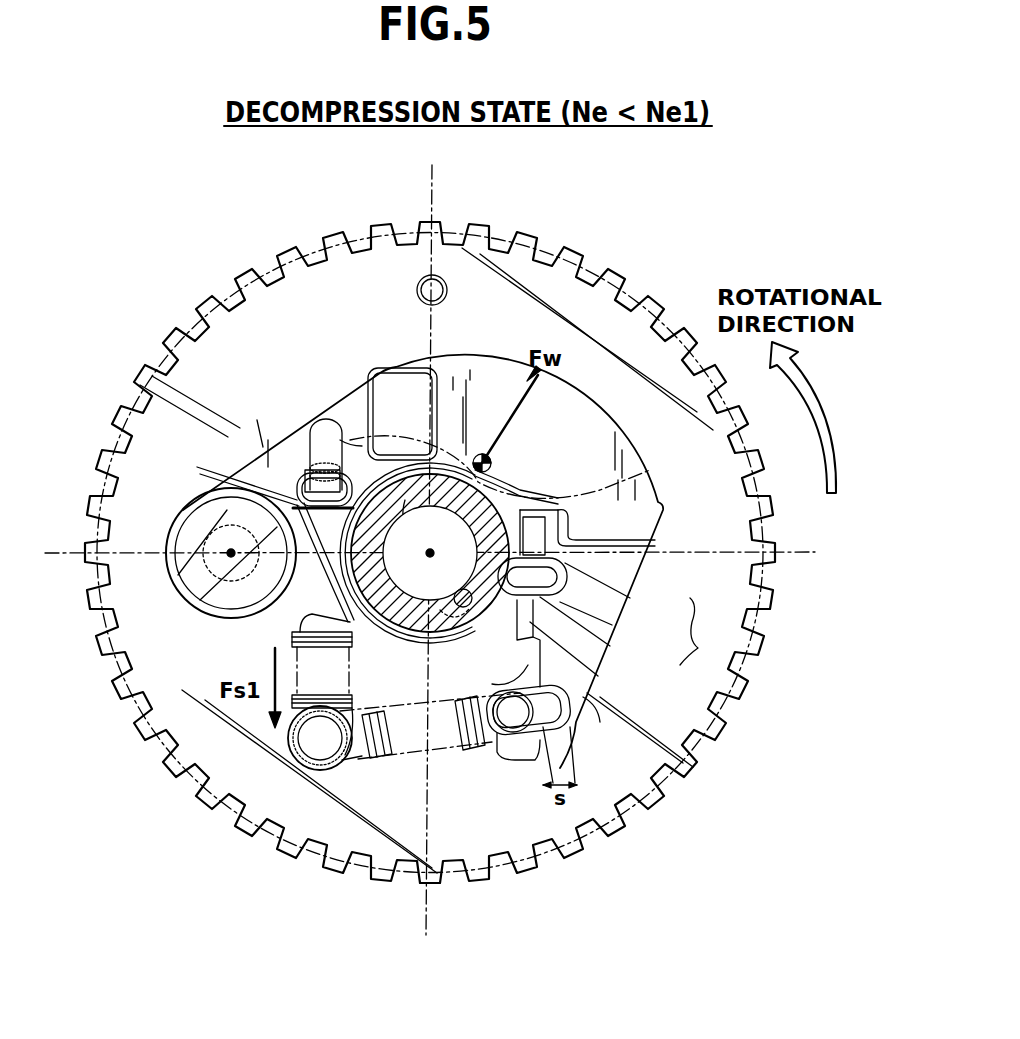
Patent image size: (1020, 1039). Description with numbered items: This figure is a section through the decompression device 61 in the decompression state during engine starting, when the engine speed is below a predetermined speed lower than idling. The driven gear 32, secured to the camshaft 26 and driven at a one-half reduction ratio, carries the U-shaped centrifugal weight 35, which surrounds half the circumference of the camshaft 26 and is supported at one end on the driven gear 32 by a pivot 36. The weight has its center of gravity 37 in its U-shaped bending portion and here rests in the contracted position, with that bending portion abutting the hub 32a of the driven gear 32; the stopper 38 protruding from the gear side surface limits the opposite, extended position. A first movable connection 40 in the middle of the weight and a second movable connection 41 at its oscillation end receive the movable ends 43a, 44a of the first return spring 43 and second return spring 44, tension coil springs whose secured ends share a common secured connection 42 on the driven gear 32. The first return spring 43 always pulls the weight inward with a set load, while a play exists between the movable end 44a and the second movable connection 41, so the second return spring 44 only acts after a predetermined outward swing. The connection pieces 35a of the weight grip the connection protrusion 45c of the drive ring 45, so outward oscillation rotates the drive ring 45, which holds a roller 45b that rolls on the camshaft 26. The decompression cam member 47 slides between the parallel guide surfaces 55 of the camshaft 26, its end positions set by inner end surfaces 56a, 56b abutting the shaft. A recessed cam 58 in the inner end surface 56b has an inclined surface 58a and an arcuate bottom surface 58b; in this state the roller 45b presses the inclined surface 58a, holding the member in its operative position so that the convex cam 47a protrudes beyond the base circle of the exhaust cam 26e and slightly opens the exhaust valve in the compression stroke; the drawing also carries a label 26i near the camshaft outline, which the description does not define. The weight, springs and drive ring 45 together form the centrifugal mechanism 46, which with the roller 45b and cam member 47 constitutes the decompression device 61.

The driven gear 32 is at (282, 300).
The centrifugal mechanism 46 is at (250, 405).
The stopper 38 is at (416, 289).
The centrifugal weight 35 is at (470, 378).
The exhaust cam 26e is at (347, 440).
The first movable connection 40 is at (324, 445).
The hub 32a is at (430, 435).
The inner end surface 56a is at (405, 500).
The center of gravity 37 is at (486, 458).
The guide surfaces 55 is at (504, 483).
The drive ring 45 is at (548, 492).
The inner end of return spring 26i is at (636, 488).
The movable end 43a is at (260, 482).
The connection pieces 35a is at (556, 536).
The pivot 36 is at (210, 578).
The camshaft 26 is at (345, 590).
The connection protrusion 45c is at (630, 568).
The first return spring 43 is at (286, 636).
The arcuate bottom surface 58b is at (628, 600).
The inclined surface 58a is at (612, 640).
The recessed cam 58 is at (703, 631).
The decompression cam member 47 is at (397, 627).
The roller 45b is at (466, 607).
The convex cam 47a is at (540, 640).
The inner end surface 56b is at (452, 612).
The common secured connection 42 is at (305, 745).
The decompression device 61 is at (427, 638).
The second return spring 44 is at (466, 750).
The second movable connection 41 is at (513, 730).
The movable end 44a is at (586, 716).